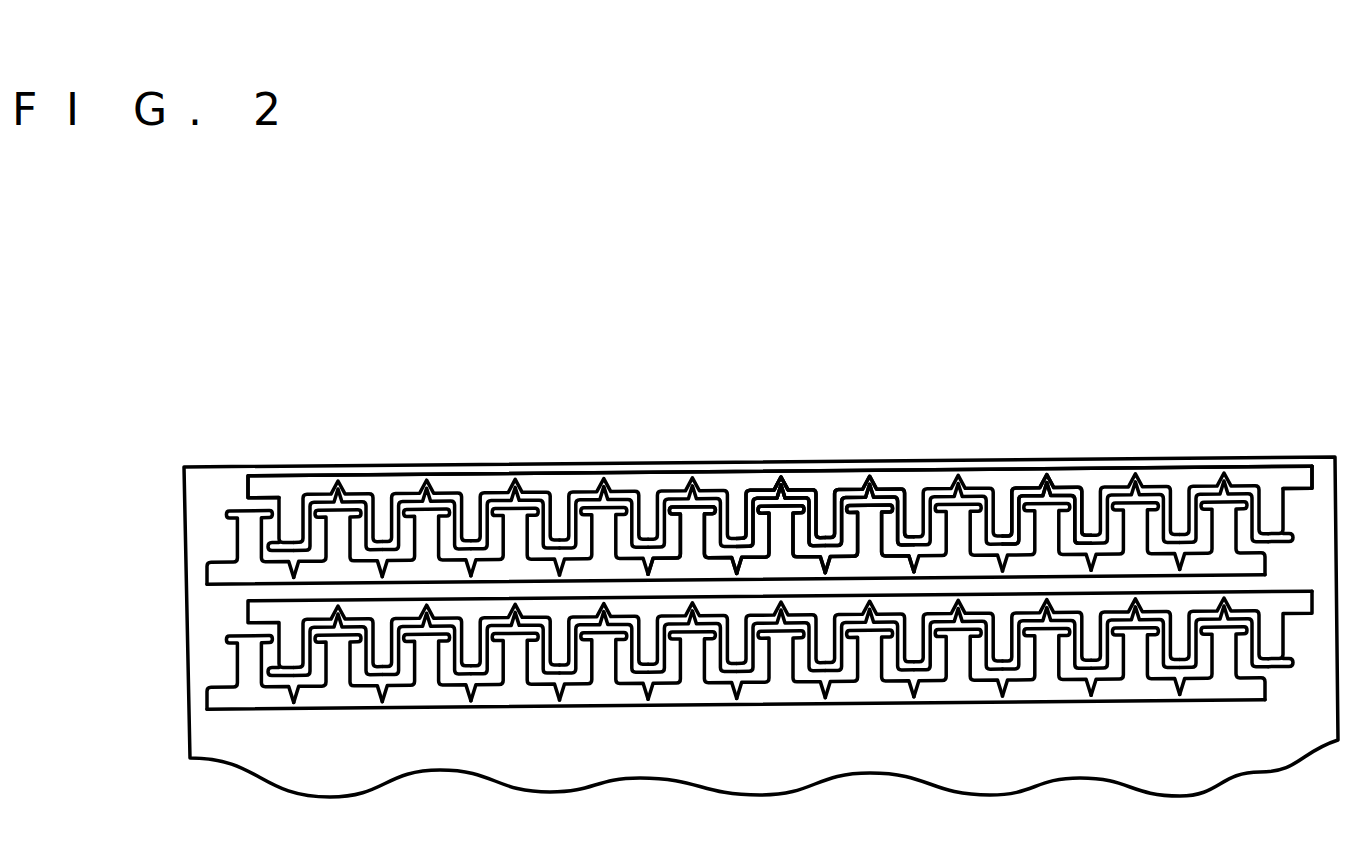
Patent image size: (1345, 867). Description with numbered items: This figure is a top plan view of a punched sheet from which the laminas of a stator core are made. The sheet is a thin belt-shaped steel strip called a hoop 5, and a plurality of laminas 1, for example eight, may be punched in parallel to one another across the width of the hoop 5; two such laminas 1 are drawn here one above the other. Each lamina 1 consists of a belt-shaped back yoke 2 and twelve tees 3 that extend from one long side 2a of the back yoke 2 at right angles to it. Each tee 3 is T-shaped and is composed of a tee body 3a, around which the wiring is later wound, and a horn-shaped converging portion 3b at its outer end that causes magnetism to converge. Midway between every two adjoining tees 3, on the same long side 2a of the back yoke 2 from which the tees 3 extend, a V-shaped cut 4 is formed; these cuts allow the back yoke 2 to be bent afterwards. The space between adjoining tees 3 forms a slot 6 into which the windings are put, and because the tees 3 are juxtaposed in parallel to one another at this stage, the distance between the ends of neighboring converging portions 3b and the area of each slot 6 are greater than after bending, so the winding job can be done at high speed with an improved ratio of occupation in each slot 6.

The lamina 1 is at (928, 468).
The back yoke 2 is at (985, 478).
The long side 2a is at (1046, 500).
The tee 3 is at (833, 378).
The tee body 3a is at (824, 522).
The converging portion 3b is at (834, 522).
The V-shaped cut 4 is at (776, 490).
The hoop 5 is at (600, 442).
The slot 6 is at (713, 503).